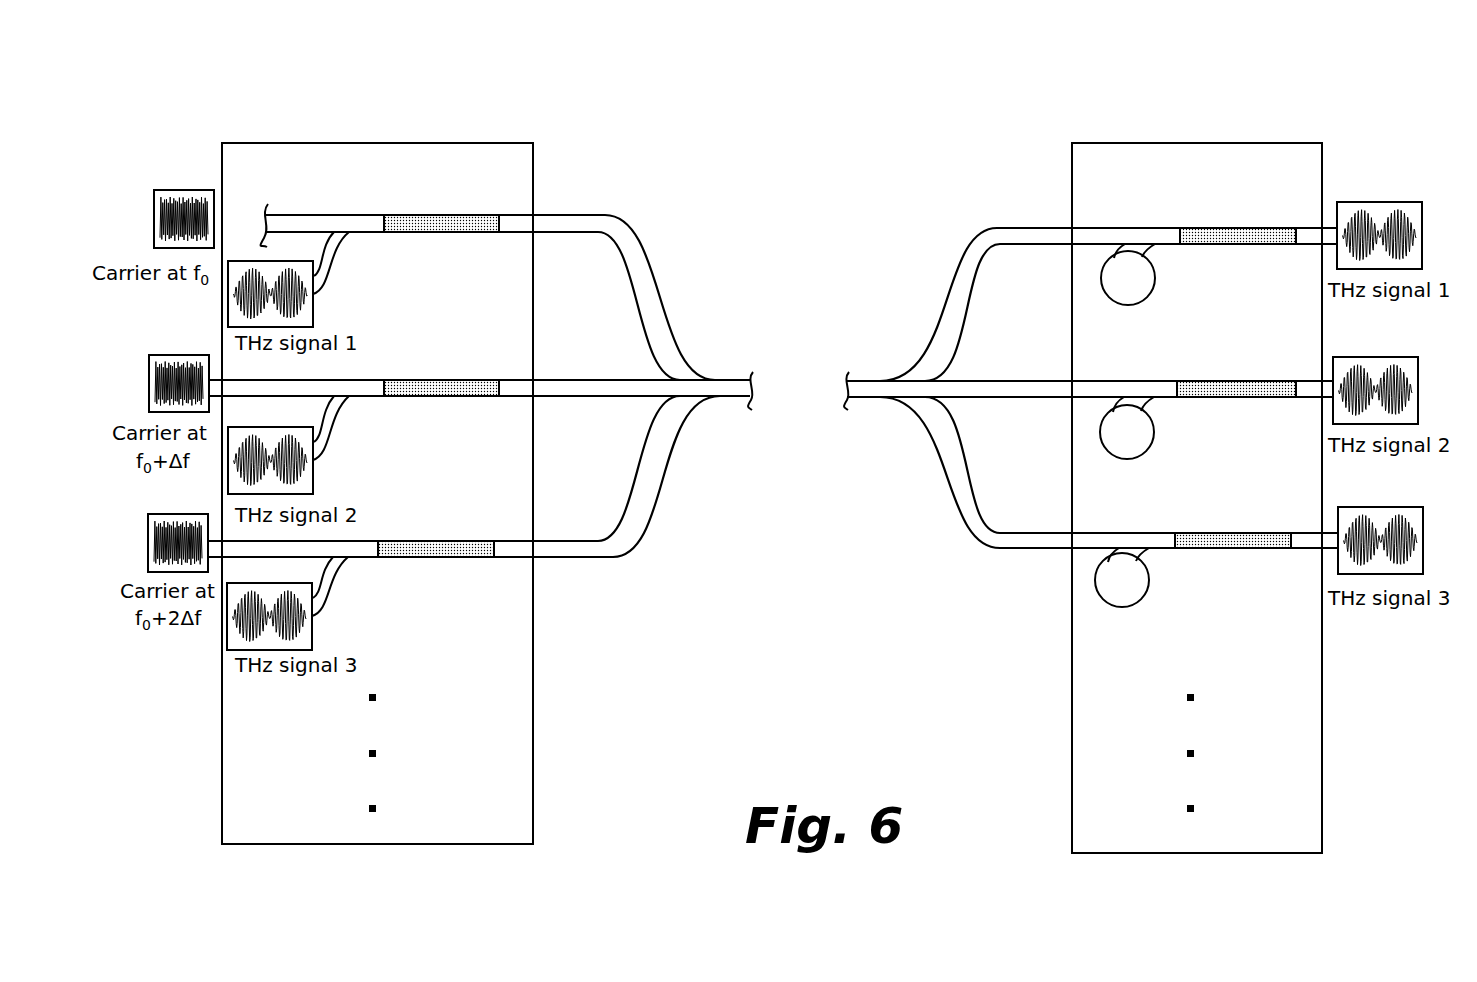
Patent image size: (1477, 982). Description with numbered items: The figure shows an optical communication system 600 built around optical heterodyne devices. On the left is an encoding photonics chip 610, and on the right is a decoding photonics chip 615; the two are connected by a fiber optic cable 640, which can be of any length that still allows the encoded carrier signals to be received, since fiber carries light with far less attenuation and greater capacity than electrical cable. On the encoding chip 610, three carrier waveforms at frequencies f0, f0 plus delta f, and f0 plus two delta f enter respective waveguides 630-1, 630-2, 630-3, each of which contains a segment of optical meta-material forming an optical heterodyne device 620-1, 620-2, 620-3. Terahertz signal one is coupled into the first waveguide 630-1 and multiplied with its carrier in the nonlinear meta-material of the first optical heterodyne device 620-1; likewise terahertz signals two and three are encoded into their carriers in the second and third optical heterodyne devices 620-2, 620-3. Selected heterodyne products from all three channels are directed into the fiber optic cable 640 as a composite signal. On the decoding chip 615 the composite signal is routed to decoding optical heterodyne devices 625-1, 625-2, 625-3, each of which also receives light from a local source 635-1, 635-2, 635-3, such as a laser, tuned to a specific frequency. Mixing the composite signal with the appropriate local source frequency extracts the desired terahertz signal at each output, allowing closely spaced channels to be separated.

The optical communication system 600 is at (288, 68).
The encoding photonics chip 610 is at (376, 180).
The decoding photonics chip 615 is at (1222, 178).
The first optical heterodyne device 620-1 is at (458, 214).
The second optical heterodyne device 620-2 is at (458, 380).
The third optical heterodyne device 620-3 is at (458, 541).
The first waveguide 630-1 is at (572, 214).
The second waveguide 630-2 is at (572, 380).
The third waveguide 630-3 is at (572, 540).
The fiber optic cable 640 is at (858, 392).
The first decoding optical heterodyne device 625-1 is at (1232, 230).
The second decoding optical heterodyne device 625-2 is at (1232, 383).
The third decoding optical heterodyne device 625-3 is at (1232, 535).
The first local source 635-1 is at (1133, 296).
The second local source 635-2 is at (1132, 450).
The third local source 635-3 is at (1127, 598).